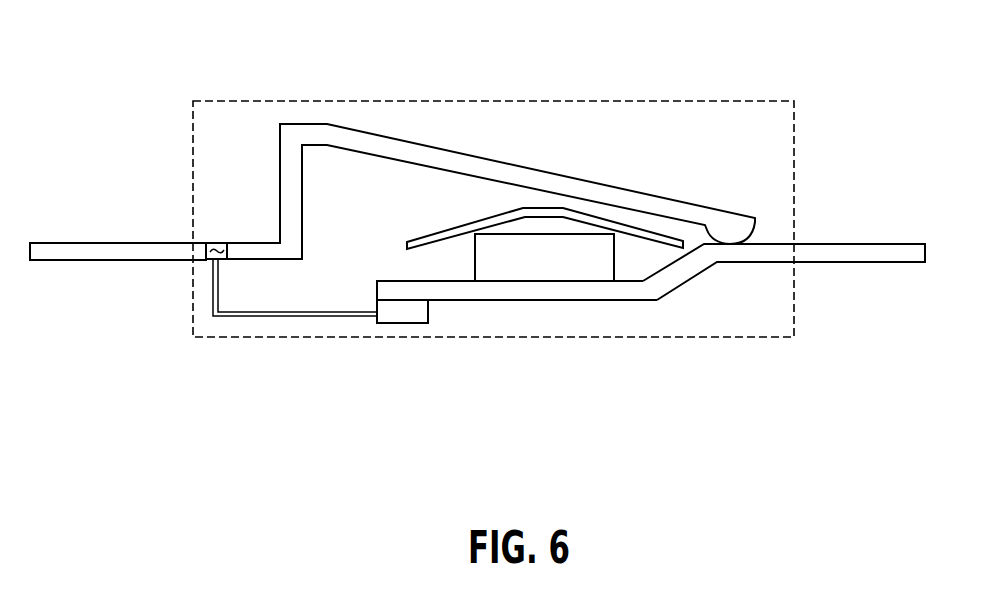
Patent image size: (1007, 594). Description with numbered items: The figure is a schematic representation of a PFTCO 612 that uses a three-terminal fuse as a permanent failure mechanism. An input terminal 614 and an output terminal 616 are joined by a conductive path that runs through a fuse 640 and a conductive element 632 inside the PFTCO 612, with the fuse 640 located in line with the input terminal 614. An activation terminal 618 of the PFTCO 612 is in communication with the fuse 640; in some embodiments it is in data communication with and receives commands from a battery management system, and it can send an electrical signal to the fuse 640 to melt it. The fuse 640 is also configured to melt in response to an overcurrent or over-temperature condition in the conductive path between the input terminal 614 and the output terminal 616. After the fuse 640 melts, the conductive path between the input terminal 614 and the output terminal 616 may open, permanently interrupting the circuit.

The PFTCO 612 is at (850, 63).
The conductive element 632 is at (303, 135).
The fuse 640 is at (213, 245).
The input terminal 614 is at (148, 248).
The activation terminal 618 is at (402, 317).
The output terminal 616 is at (860, 255).